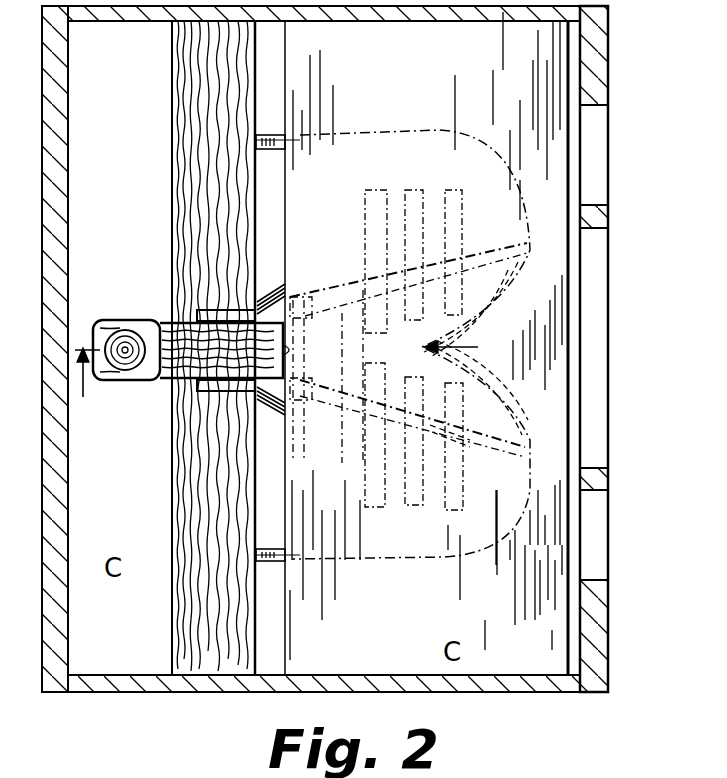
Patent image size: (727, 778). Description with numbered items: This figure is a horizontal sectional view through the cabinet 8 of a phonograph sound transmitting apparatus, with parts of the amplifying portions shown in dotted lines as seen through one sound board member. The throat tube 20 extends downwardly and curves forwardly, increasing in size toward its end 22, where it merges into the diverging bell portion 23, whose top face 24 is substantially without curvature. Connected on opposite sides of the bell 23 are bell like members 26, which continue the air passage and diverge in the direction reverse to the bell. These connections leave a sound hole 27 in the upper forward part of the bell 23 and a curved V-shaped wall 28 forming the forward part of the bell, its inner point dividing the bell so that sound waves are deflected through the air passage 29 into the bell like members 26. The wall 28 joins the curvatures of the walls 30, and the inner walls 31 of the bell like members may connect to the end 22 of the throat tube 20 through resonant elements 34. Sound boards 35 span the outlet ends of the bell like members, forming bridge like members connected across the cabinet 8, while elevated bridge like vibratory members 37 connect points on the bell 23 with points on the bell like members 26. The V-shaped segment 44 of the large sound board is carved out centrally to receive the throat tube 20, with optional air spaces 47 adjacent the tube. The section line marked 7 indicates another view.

The cabinet 8 is at (595, 75).
The sound boards 35 is at (505, 78).
The segment 44 is at (215, 122).
The throat tube 20 is at (176, 362).
The air passage 29 is at (125, 330).
The section line 7 is at (289, 387).
The air spaces 47 is at (215, 311).
The inner walls 31 is at (268, 300).
The bell like members 26 is at (285, 150).
The walls 30 is at (273, 139).
The end 22 is at (285, 353).
The resonant elements 34 is at (300, 292).
The bell portion 23 is at (362, 352).
The bridge like vibratory members 37 is at (452, 192).
The sound hole 27 is at (515, 272).
The V-shaped wall 28 is at (505, 412).
The top face 24 is at (470, 440).